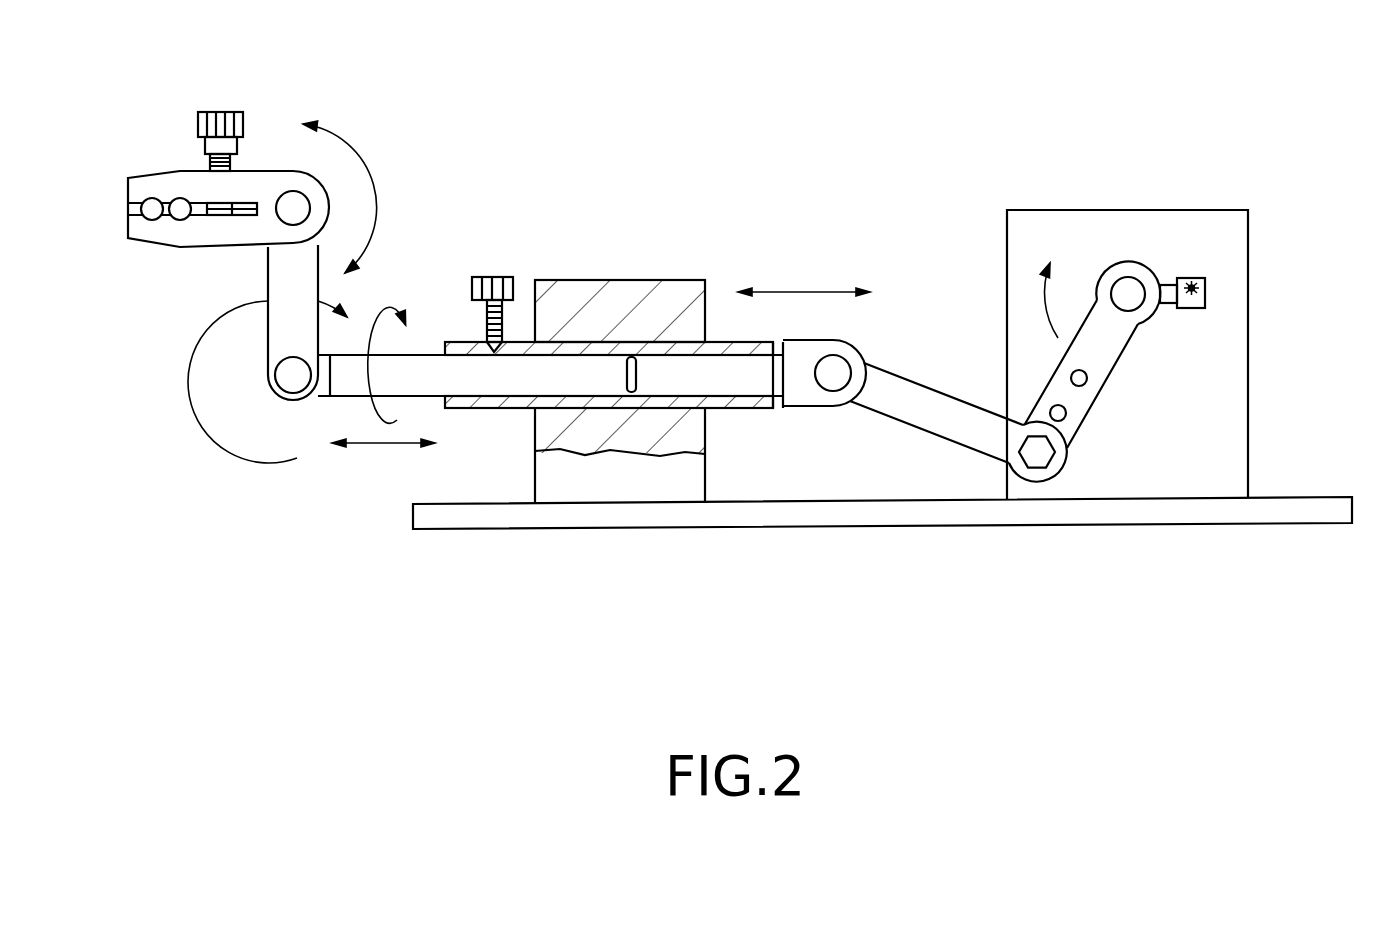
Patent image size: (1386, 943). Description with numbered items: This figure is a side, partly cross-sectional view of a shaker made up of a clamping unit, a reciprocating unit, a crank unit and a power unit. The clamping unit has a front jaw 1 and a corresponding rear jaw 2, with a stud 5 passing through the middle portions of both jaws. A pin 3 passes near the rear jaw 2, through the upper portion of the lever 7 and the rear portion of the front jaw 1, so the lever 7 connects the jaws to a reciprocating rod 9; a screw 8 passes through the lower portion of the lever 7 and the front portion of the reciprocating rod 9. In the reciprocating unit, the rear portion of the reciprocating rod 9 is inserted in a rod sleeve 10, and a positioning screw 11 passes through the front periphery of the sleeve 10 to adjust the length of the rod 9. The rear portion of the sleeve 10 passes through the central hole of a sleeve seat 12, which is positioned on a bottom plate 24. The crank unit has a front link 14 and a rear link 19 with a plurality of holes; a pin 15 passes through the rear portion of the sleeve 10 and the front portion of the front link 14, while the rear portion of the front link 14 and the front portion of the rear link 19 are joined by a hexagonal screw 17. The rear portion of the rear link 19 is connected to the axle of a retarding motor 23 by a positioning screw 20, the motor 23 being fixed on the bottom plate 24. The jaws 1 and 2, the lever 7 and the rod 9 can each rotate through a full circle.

The front jaw 1 is at (140, 177).
The rear jaw 2 is at (128, 240).
The pin 3 is at (282, 215).
The stud 5 is at (242, 115).
The lever 7 is at (278, 328).
The screw 8 is at (278, 400).
The reciprocating rod 9 is at (428, 365).
The rod sleeve 10 is at (722, 342).
The positioning screw 11 is at (477, 277).
The sleeve seat 12 is at (598, 280).
The front link 14 is at (903, 382).
The pin 15 is at (825, 382).
The hexagonal screw 17 is at (1040, 460).
The rear link 19 is at (1107, 360).
The positioning screw 20 is at (1207, 280).
The retarding motor 23 is at (1135, 210).
The bottom plate 24 is at (897, 527).